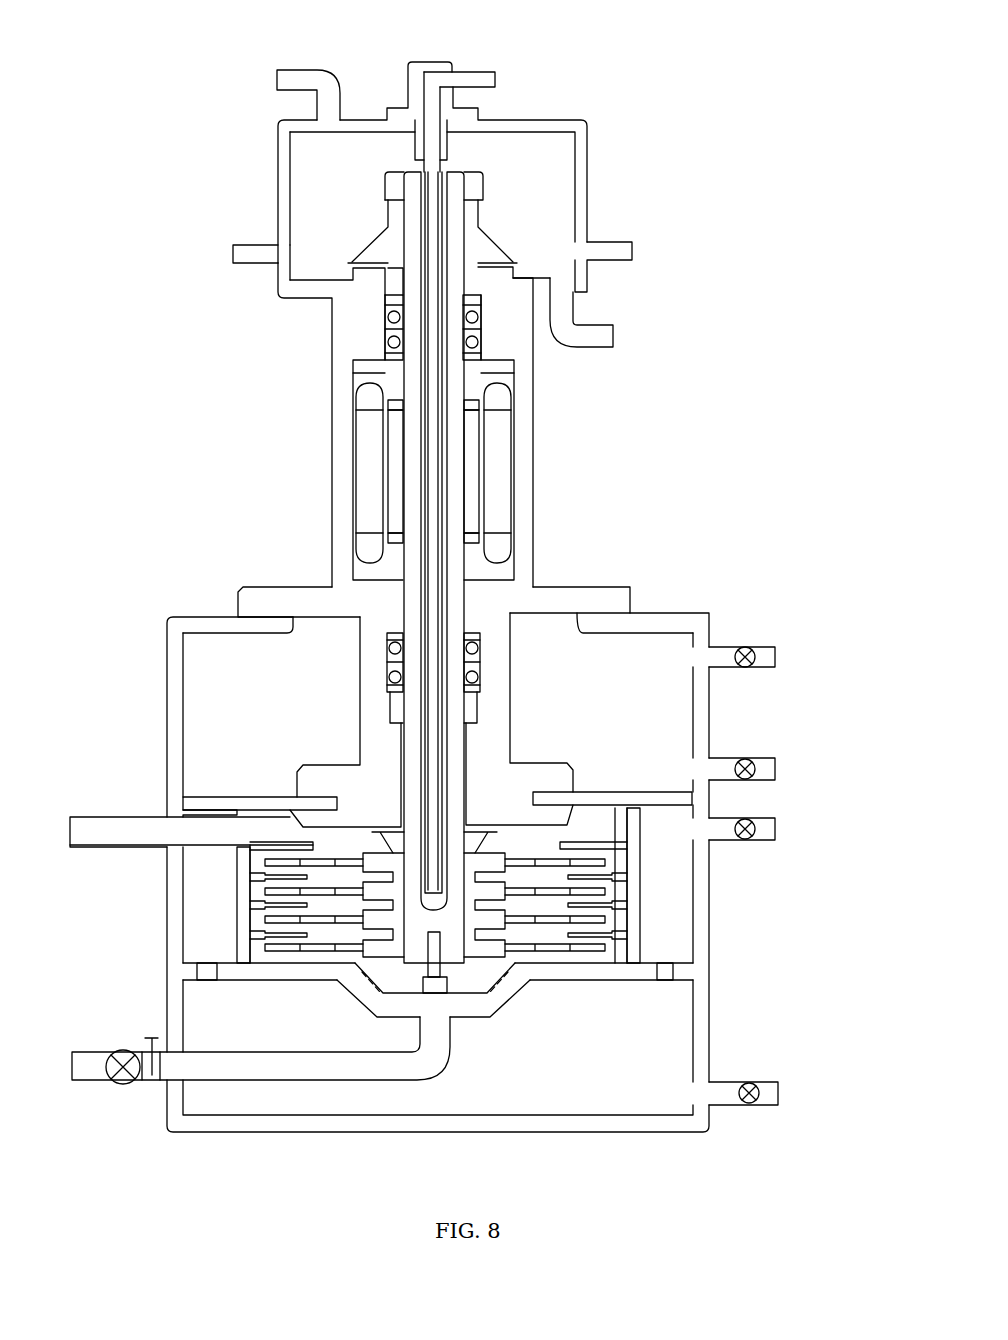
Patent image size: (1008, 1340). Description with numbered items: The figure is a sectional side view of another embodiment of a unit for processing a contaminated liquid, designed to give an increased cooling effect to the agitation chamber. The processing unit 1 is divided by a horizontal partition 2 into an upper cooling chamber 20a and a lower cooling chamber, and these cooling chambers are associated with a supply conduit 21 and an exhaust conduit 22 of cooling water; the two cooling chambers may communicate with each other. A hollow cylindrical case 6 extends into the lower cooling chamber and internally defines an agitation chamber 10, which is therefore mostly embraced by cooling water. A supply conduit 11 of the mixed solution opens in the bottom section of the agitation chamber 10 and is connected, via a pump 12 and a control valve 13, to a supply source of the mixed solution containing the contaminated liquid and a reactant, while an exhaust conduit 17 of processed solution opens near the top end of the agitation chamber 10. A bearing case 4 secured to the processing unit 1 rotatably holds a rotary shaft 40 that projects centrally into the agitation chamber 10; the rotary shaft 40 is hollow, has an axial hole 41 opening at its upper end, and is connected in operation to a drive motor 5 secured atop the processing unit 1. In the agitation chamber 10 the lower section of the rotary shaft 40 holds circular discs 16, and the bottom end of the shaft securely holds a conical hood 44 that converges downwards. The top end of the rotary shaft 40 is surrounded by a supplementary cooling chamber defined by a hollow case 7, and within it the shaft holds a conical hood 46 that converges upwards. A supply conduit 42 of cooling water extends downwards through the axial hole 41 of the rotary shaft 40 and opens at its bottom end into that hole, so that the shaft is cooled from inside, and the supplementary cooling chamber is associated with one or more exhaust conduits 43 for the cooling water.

The processing unit 1 is at (135, 660).
The horizontal partition 2 is at (603, 797).
The bearing case 4 is at (387, 666).
The drive motor 5 is at (495, 447).
The hollow cylindrical case 6 is at (632, 932).
The hollow case 7 is at (280, 182).
The agitation chamber 10 is at (607, 827).
The supply conduit 11 is at (258, 1070).
The pump 12 is at (120, 1085).
The control valve 13 is at (150, 1078).
The circular discs 16 is at (543, 925).
The exhaust conduit 17 is at (95, 826).
The upper cooling chamber 20a is at (611, 665).
The supply conduit of cooling water 21 is at (763, 762).
The exhaust conduit of cooling water 22 is at (763, 650).
The rotary shaft 40 is at (455, 480).
The axial hole 41 is at (447, 560).
The supply conduit of cooling water 42 is at (470, 78).
The exhaust conduit of cooling water 43 is at (292, 80).
The conical hood 44 is at (397, 973).
The conical hood 46 is at (485, 245).